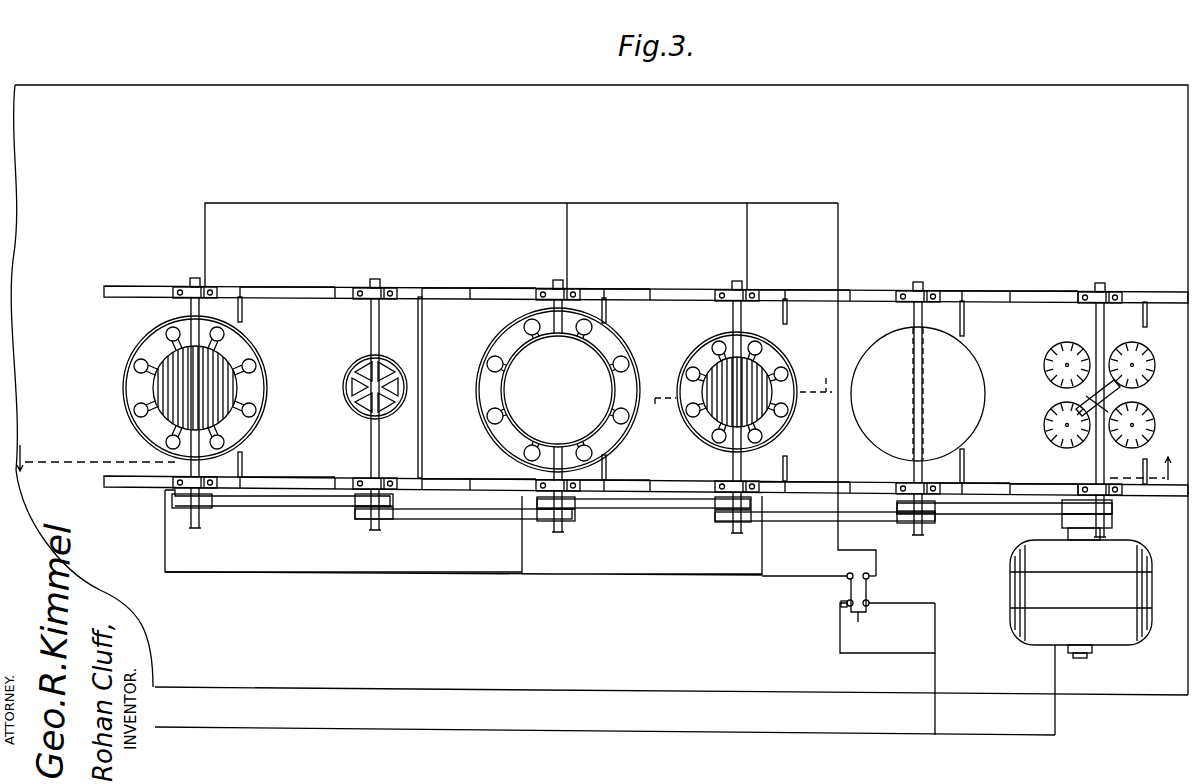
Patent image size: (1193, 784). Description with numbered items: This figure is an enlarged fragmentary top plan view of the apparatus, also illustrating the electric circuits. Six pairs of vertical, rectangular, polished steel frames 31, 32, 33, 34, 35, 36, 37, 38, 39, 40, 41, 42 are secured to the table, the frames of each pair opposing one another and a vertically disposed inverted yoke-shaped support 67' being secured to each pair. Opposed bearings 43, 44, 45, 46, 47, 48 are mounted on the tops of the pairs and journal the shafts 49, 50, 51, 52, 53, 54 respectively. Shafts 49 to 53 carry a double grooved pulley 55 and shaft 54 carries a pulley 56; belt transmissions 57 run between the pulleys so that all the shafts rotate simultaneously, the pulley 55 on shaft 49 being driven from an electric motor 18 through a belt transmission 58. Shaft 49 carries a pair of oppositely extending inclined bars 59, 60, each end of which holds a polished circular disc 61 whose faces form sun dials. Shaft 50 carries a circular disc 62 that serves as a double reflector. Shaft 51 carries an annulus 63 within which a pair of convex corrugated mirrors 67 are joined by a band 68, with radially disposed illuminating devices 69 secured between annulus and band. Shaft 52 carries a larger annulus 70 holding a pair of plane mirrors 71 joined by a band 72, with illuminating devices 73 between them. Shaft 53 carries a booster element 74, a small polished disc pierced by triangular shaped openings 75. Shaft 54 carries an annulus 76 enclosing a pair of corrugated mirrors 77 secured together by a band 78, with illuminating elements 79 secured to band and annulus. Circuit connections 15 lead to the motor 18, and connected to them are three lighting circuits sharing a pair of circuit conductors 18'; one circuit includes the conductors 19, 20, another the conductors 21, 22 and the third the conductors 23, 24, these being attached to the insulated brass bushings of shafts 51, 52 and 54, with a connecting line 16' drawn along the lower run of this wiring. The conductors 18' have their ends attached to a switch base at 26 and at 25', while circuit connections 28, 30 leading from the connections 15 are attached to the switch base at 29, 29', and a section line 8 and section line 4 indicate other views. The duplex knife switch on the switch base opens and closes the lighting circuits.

The section line 4- 4 is at (592, 467).
The section line 8- 8 is at (740, 393).
The circuit connections 15 is at (718, 731).
The frame cross bar 16' is at (463, 586).
The electric motor 18 is at (1088, 627).
The circuit conductors 18' is at (865, 586).
The circuit conductor 19 is at (748, 238).
The circuit conductor 20 is at (764, 552).
The circuit conductor 21 is at (568, 234).
The circuit conductor 22 is at (522, 552).
The circuit conductor 23 is at (207, 236).
The circuit conductor 24 is at (166, 541).
The pipe 25' is at (804, 589).
The switch base attachment 26 is at (872, 582).
The circuit connection 28 is at (893, 645).
The switch base attachment 29 is at (821, 621).
The switch base attachment 29' is at (917, 590).
The circuit connection 30 is at (936, 640).
The frame 31 is at (1043, 296).
The frame 32 is at (1032, 487).
The frame 33 is at (988, 294).
The frame 34 is at (979, 485).
The frame 35 is at (798, 292).
The frame 36 is at (800, 483).
The frame 37 is at (620, 290).
The frame 38 is at (620, 482).
The frame 39 is at (441, 289).
The frame 40 is at (436, 479).
The frame 41 is at (269, 285).
The frame 42 is at (266, 478).
The bearings 43 is at (1104, 296).
The bearings 44 is at (922, 292).
The bearings 45 is at (733, 288).
The bearings 46 is at (553, 287).
The bearings 47 is at (384, 284).
The bearings 48 is at (190, 282).
The shaft 49 is at (1096, 320).
The shaft 50 is at (912, 318).
The shaft 51 is at (742, 314).
The shaft 52 is at (550, 309).
The shaft 53 is at (370, 313).
The shaft 54 is at (186, 306).
The double grooved pulley 55 is at (566, 519).
The pulley 56 is at (175, 506).
The belt transmissions 57 is at (981, 514).
The belt transmission 58 is at (1062, 522).
The inclined bar 59 is at (1114, 394).
The inclined bar 60 is at (1118, 406).
The circular disc 61 is at (1150, 362).
The circular disc 62 is at (965, 375).
The annulus 63 is at (798, 398).
The convex corrugated mirrors 67 is at (761, 382).
The inverted yoke-shaped support 67' is at (444, 387).
The band 68 is at (704, 426).
The illuminating devices 69 is at (686, 396).
The annulus 70 is at (620, 346).
The plane mirrors 71 is at (517, 382).
The band 72 is at (512, 432).
The illuminating devices 73 is at (482, 405).
The booster element 74 is at (385, 358).
The triangular shaped openings 75 is at (365, 370).
The annulus 76 is at (255, 350).
The corrugated mirrors 77 is at (175, 383).
The band 78 is at (152, 420).
The illuminating elements 79 is at (134, 360).